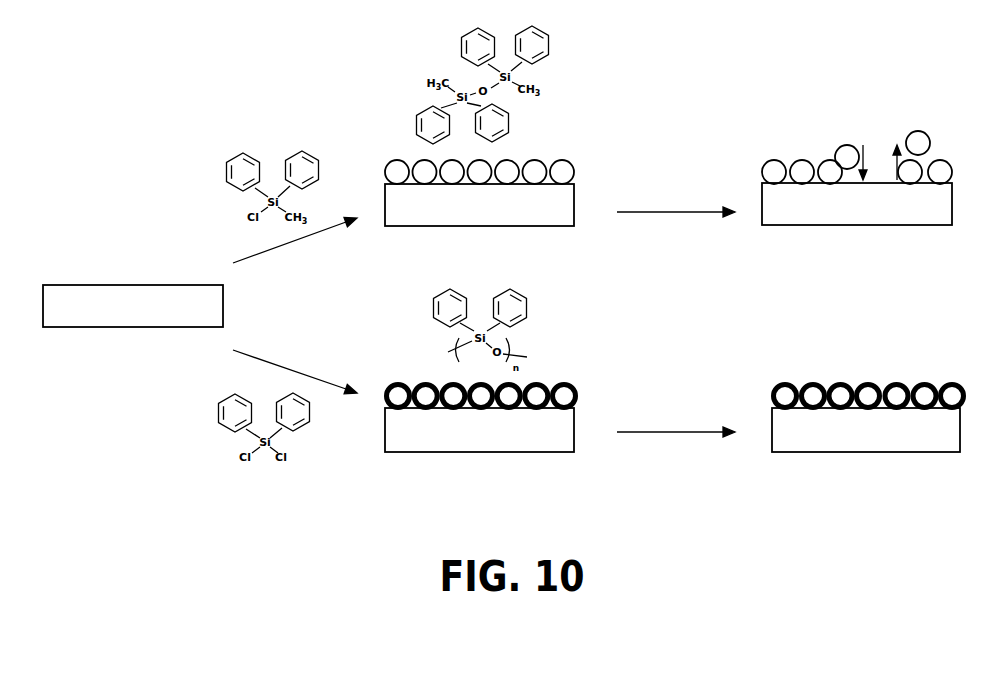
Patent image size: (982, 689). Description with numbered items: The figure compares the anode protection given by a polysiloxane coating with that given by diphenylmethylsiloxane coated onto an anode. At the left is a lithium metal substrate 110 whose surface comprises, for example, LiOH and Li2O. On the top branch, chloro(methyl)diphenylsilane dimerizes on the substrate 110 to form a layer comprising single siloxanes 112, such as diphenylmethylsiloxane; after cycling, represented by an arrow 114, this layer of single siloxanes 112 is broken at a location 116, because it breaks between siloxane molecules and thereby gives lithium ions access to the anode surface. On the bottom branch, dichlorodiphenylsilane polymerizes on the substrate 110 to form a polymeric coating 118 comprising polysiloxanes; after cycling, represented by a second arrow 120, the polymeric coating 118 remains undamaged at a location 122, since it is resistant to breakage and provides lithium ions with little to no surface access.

The lithium metal substrate 110 is at (882, 439).
The single siloxanes 112 is at (818, 125).
The arrow 114 is at (637, 212).
The location 116 is at (875, 116).
The polymeric coating 118 is at (828, 352).
The second arrow 120 is at (637, 432).
The location 122 is at (882, 345).